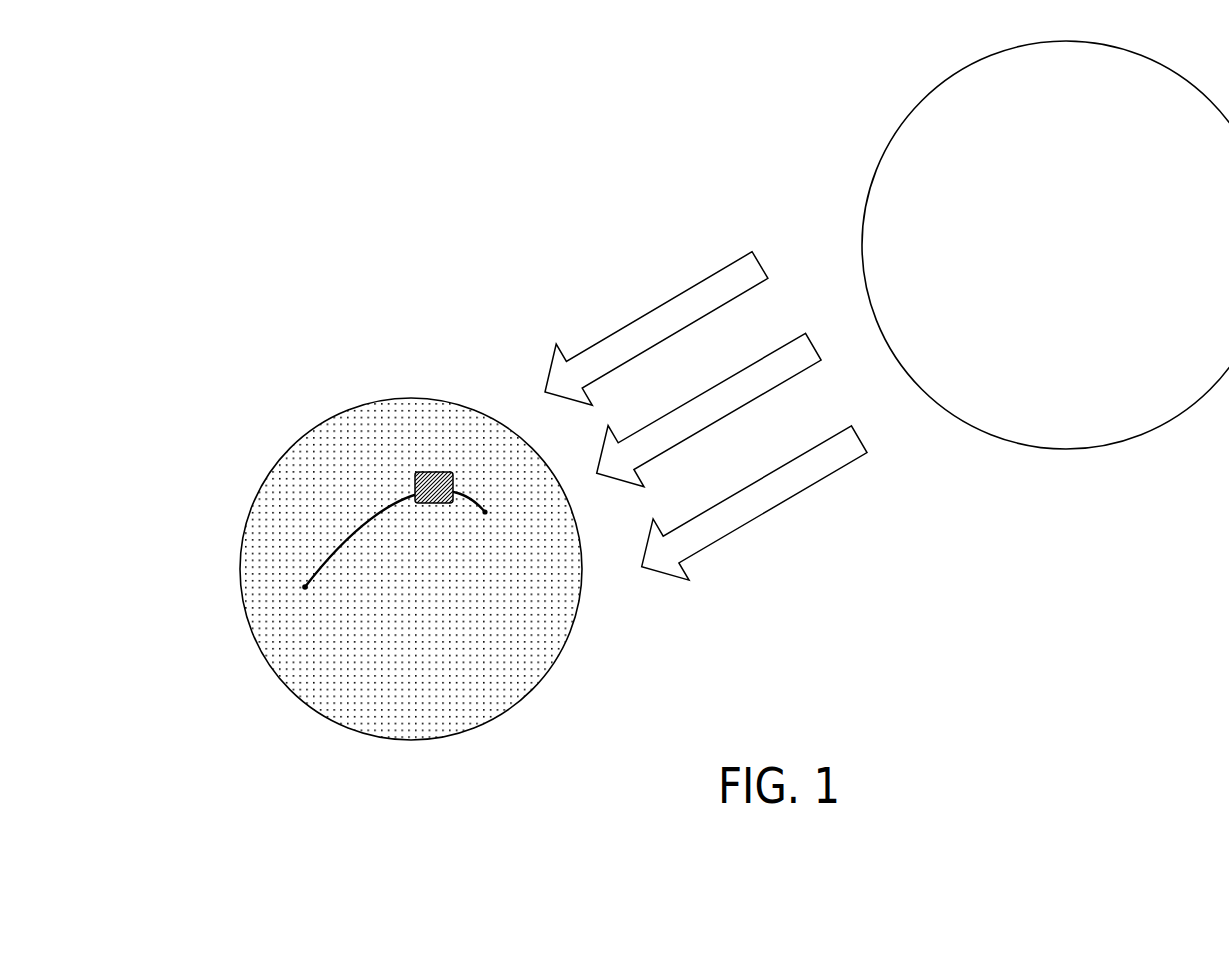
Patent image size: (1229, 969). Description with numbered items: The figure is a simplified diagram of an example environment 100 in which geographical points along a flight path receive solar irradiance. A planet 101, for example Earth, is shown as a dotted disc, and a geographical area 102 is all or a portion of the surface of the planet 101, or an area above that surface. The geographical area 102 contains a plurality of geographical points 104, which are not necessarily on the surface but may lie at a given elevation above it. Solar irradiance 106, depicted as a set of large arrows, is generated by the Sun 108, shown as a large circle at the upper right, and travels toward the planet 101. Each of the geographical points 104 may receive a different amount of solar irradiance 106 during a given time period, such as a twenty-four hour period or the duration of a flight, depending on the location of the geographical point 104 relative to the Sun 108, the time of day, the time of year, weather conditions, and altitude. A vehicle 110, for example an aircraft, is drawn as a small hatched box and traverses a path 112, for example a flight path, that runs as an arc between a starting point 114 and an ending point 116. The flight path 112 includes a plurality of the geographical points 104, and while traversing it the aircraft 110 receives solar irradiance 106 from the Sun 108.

The environment 100 is at (332, 197).
The planet 101 is at (230, 645).
The geographical area 102 is at (377, 742).
The geographical points 104 is at (305, 539).
The solar irradiance 106 is at (662, 277).
The Sun 108 is at (1098, 448).
The vehicle 110 is at (437, 472).
The path 112 is at (380, 503).
The starting point 114 is at (485, 512).
The ending point 116 is at (305, 587).